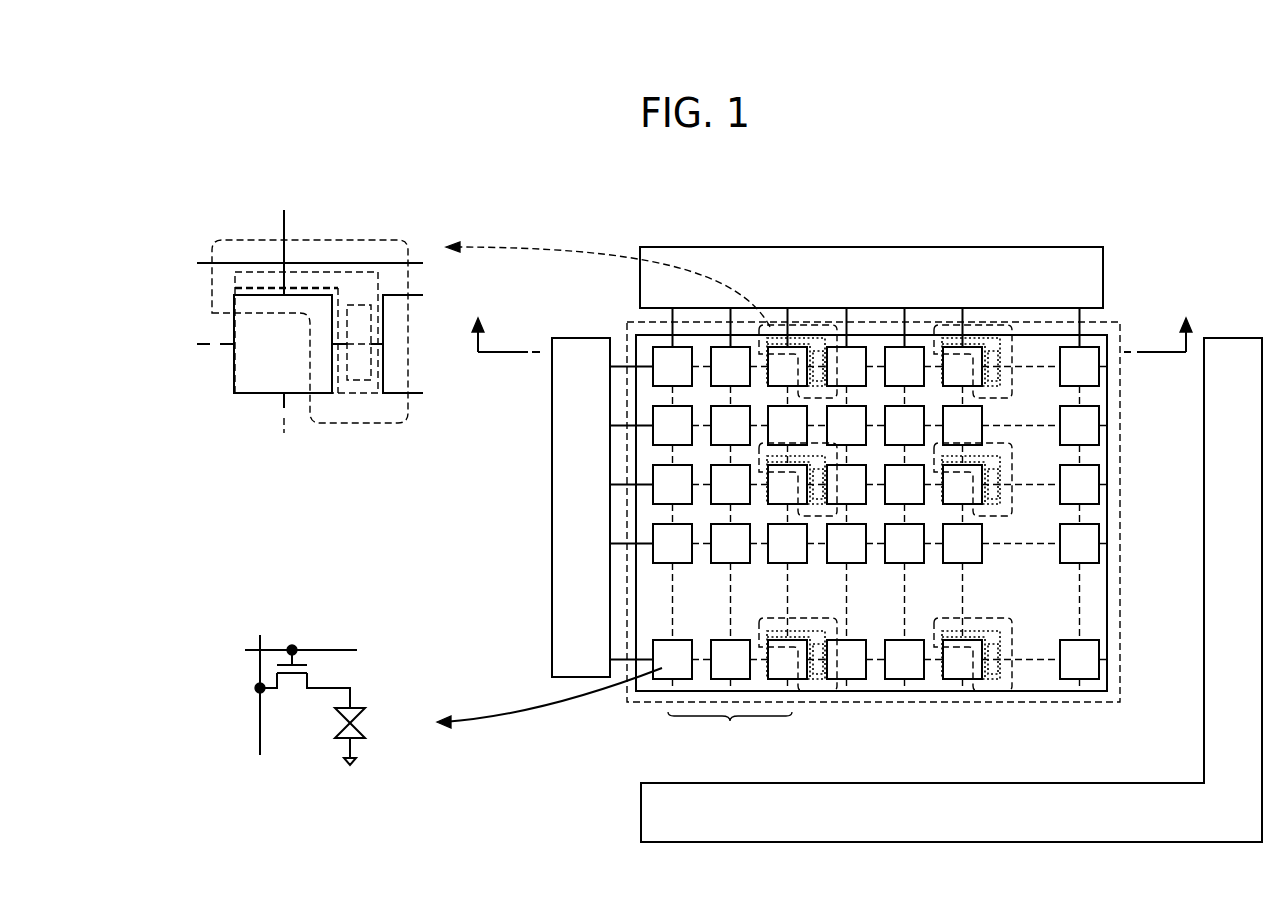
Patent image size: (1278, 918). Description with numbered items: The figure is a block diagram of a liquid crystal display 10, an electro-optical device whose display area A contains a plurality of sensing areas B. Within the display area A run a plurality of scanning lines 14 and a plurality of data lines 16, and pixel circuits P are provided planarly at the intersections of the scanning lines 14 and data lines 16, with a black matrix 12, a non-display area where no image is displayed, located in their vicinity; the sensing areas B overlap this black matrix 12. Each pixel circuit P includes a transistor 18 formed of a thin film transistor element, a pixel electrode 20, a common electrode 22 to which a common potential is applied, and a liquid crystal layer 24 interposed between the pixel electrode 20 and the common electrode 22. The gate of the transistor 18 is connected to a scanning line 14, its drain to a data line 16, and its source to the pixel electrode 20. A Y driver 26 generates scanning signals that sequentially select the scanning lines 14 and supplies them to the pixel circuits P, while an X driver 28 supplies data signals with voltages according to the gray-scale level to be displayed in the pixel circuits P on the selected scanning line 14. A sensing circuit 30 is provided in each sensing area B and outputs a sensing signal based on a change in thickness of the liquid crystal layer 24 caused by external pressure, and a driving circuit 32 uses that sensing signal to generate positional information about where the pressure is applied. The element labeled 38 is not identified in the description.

The liquid crystal display 10 is at (605, 225).
The black matrix 12 is at (1100, 332).
The scanning line 14 is at (205, 343).
The data line 16 is at (284, 213).
The transistor 18 is at (291, 686).
The pixel electrode 20 is at (355, 712).
The common electrode 22 is at (356, 742).
The liquid crystal layer 24 is at (366, 723).
The Y driver 26 is at (552, 522).
The X driver 28 is at (640, 262).
The sensing circuit 30 is at (335, 272).
The driving circuit 32 is at (641, 808).
The storage capacitor 38 is at (349, 380).
The display area A is at (630, 323).
The sensing area B is at (406, 240).
The pixel circuit P is at (234, 363).